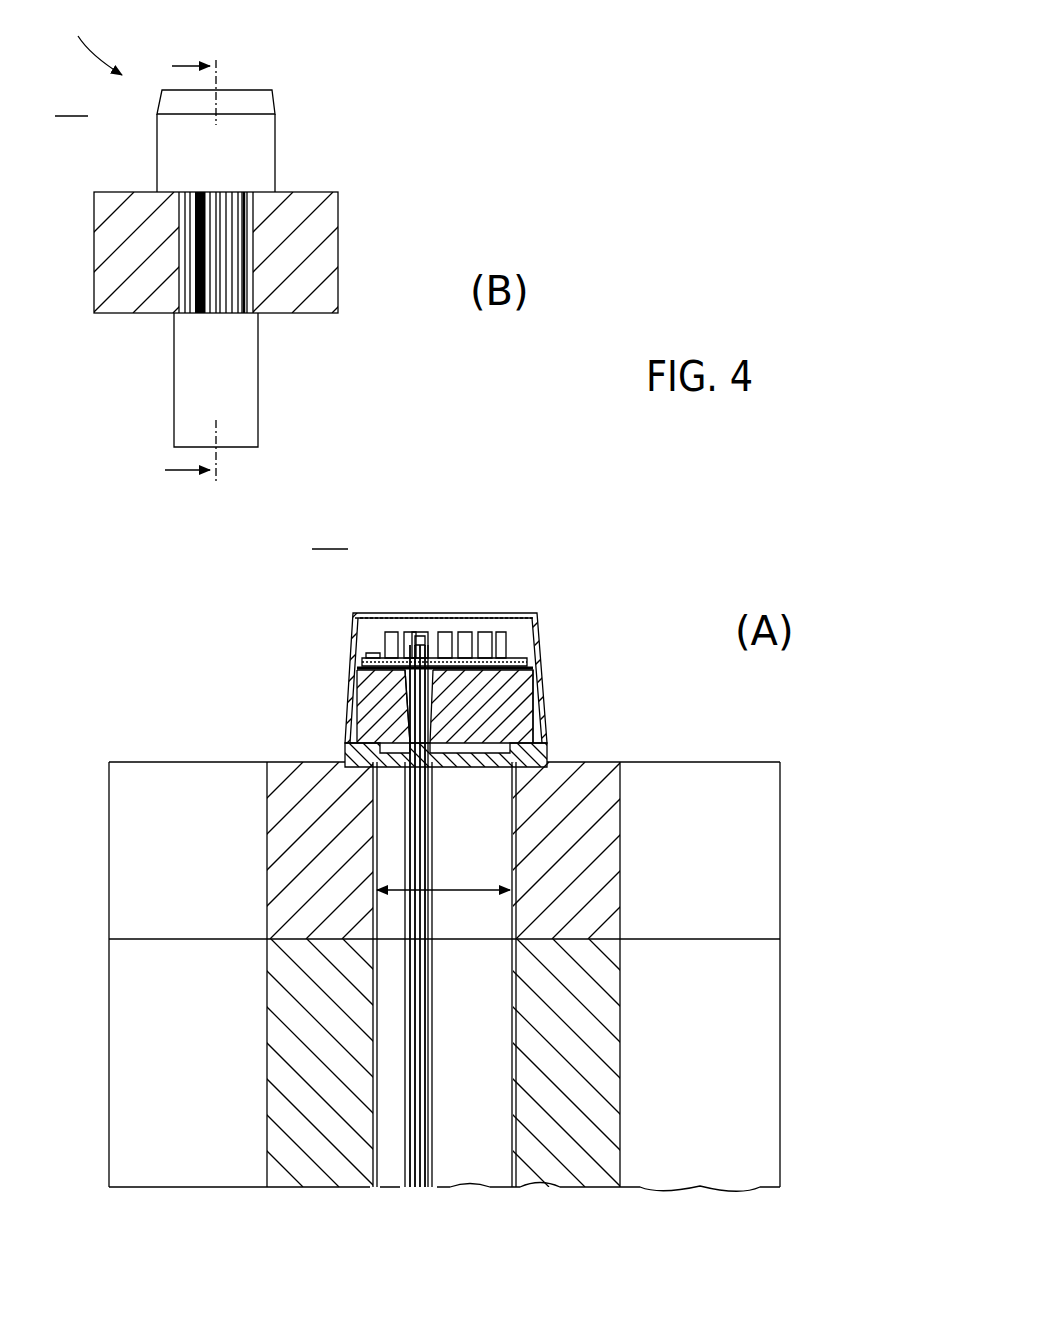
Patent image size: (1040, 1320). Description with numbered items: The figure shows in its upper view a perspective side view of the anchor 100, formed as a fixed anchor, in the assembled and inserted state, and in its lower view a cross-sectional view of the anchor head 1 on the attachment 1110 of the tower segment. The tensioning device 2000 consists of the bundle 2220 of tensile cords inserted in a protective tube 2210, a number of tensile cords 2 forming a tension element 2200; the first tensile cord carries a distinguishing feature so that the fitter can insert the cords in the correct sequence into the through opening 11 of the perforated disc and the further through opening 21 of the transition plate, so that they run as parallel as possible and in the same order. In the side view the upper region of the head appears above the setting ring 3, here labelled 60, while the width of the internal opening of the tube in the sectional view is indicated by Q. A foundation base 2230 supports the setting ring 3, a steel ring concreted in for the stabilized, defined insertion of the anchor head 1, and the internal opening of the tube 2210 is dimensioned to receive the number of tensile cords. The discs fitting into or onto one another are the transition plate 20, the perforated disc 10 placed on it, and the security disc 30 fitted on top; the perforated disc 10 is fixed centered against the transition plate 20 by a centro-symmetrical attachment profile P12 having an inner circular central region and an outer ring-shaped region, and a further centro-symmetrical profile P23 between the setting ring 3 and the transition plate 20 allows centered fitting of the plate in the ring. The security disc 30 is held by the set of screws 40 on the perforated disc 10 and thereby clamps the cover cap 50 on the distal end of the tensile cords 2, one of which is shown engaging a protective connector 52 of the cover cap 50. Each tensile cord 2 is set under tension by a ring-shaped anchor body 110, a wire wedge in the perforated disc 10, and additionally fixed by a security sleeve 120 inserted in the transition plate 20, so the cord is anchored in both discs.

The anchor head 1 is at (310, 113).
The tensile cord 2 is at (255, 247).
The setting ring 3 is at (133, 305).
The perforated disc 10 is at (520, 682).
The through opening 11 is at (440, 684).
The transition plate 20 is at (368, 753).
The further through opening 21 is at (465, 724).
The security disc 30 is at (408, 660).
The set of screws 40 is at (368, 660).
The cover cap 50 is at (508, 640).
The protective connector 52 is at (418, 640).
The cap top 60 is at (272, 98).
The anchor 100 is at (201, 279).
The ring-shaped anchor body 110 is at (400, 689).
The security sleeve 120 is at (400, 771).
The attachment 1110 is at (700, 1009).
The tensioning device 2000 is at (420, 190).
The tension element 2200 is at (431, 985).
The protective tube 2210 is at (230, 368).
The bundle of tensile cords 2220 is at (240, 290).
The foundation base 2230 is at (152, 1001).
The centro-symmetrical attachment profile P12 is at (505, 748).
The further centro-symmetrical profile P23 is at (505, 775).
The width Q is at (478, 888).